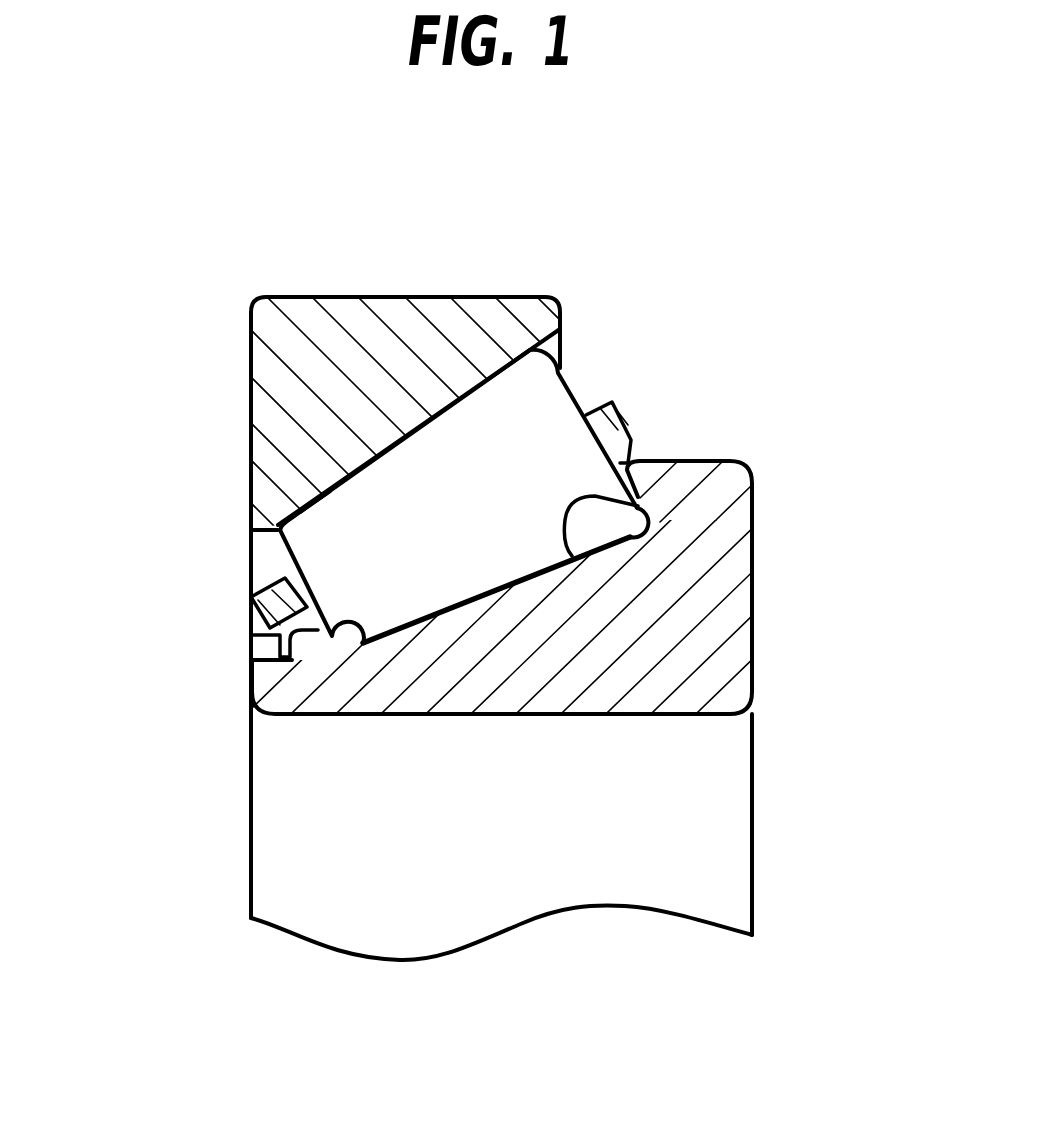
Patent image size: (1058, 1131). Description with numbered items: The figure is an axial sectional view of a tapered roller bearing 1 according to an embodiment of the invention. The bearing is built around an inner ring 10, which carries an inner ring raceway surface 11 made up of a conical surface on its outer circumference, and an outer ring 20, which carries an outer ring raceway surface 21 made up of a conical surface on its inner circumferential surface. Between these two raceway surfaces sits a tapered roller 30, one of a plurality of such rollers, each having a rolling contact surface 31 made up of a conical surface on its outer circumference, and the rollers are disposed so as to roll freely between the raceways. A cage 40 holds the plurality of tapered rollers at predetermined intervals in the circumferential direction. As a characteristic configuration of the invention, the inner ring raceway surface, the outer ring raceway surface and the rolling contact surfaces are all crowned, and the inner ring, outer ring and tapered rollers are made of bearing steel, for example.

The tapered roller bearing 1 is at (723, 322).
The inner ring 10 is at (722, 651).
The inner ring raceway surface 11 is at (638, 494).
The outer ring 20 is at (327, 344).
The outer ring raceway surface 21 is at (447, 403).
The tapered roller 30 is at (395, 490).
The rolling contact surface 31 is at (317, 497).
The cage 40 is at (262, 613).